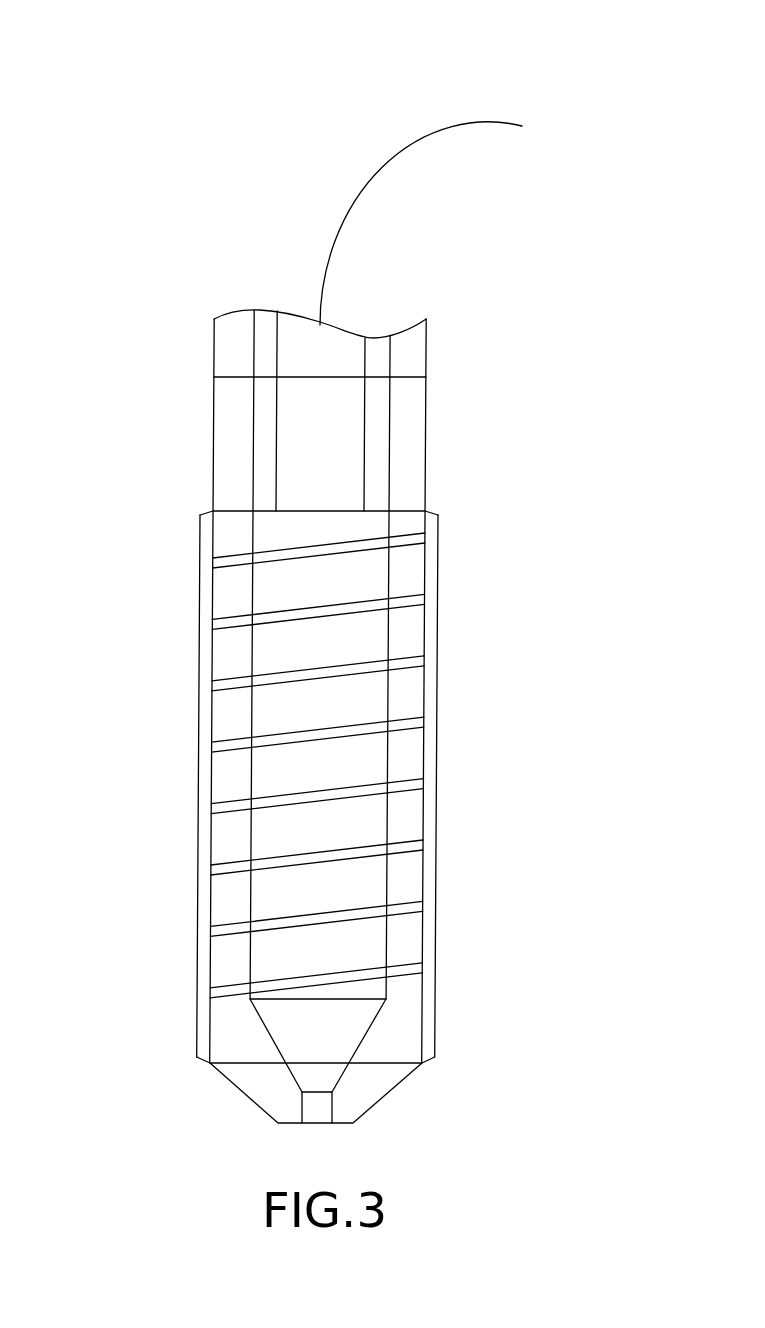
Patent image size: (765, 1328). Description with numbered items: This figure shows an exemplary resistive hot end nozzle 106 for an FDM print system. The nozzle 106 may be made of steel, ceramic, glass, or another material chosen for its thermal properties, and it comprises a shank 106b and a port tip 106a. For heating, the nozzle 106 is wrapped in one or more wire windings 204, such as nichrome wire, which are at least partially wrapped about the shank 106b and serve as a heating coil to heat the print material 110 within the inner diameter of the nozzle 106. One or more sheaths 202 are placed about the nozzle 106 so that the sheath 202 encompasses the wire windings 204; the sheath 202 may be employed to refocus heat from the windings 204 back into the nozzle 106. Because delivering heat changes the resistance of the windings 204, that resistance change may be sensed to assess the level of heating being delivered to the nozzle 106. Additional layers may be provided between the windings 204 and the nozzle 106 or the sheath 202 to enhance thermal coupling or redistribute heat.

The print material 110 is at (398, 143).
The nozzle 106 is at (328, 429).
The port tip 106a is at (377, 1103).
The shank 106b is at (427, 508).
The sheath 202 is at (198, 647).
The wire windings 204 is at (407, 600).